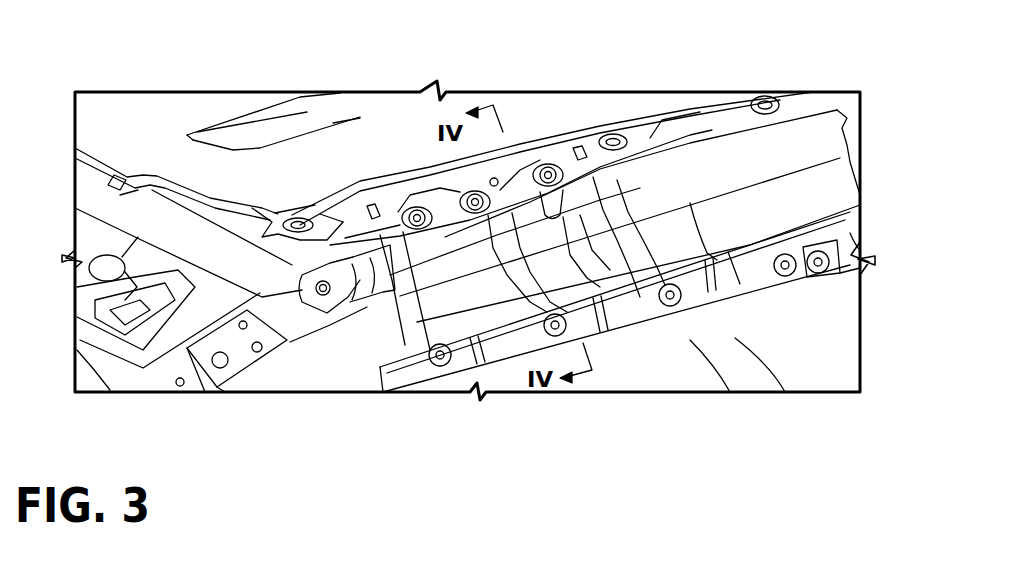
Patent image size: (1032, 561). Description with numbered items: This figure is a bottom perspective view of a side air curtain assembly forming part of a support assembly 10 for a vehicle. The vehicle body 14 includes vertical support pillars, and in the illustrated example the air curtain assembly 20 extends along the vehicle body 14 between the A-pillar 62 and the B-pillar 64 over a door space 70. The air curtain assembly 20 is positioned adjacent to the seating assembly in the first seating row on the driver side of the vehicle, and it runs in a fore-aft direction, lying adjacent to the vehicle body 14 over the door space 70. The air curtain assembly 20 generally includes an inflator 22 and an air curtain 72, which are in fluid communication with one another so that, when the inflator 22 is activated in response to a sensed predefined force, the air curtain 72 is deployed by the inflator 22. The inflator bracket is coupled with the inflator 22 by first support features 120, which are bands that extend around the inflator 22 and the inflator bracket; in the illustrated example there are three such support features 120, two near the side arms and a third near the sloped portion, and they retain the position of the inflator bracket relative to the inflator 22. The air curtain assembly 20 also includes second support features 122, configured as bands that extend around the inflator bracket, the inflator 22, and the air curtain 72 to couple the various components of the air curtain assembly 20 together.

The support assembly 10 is at (763, 72).
The vehicle body 14 is at (348, 157).
The air curtain assembly 20 is at (670, 140).
The inflator 22 is at (453, 237).
The A-pillar 62 is at (300, 370).
The B-pillar 64 is at (843, 243).
The door space 70 is at (735, 338).
The air curtain 72 is at (604, 273).
The first support features 120 is at (405, 195).
The second support features 122 is at (400, 323).